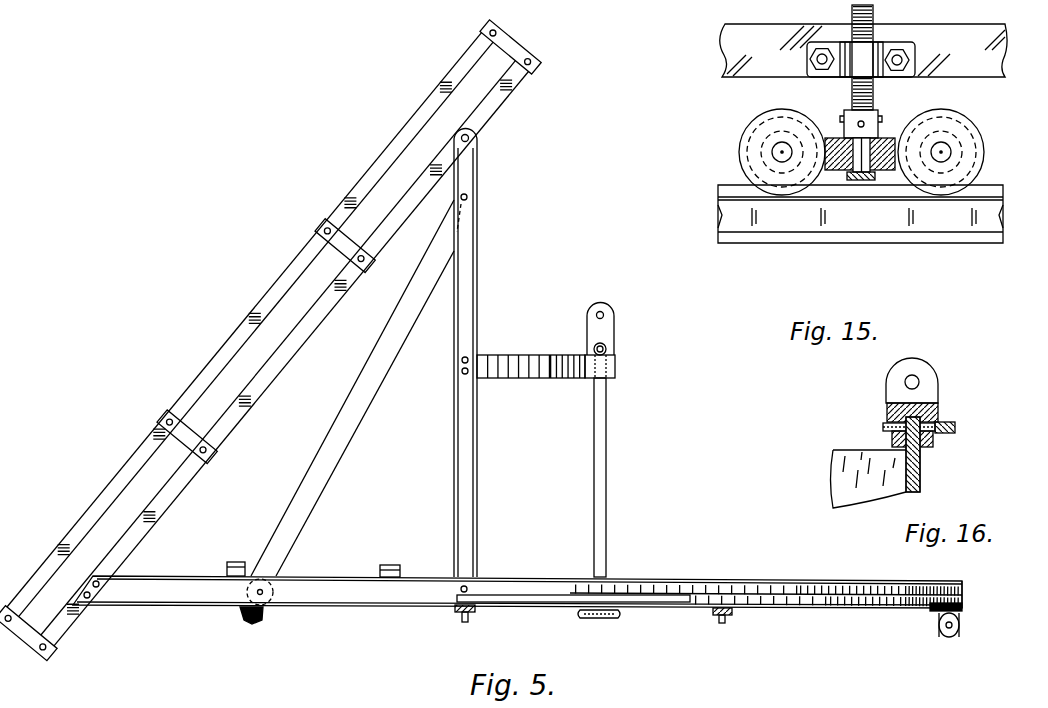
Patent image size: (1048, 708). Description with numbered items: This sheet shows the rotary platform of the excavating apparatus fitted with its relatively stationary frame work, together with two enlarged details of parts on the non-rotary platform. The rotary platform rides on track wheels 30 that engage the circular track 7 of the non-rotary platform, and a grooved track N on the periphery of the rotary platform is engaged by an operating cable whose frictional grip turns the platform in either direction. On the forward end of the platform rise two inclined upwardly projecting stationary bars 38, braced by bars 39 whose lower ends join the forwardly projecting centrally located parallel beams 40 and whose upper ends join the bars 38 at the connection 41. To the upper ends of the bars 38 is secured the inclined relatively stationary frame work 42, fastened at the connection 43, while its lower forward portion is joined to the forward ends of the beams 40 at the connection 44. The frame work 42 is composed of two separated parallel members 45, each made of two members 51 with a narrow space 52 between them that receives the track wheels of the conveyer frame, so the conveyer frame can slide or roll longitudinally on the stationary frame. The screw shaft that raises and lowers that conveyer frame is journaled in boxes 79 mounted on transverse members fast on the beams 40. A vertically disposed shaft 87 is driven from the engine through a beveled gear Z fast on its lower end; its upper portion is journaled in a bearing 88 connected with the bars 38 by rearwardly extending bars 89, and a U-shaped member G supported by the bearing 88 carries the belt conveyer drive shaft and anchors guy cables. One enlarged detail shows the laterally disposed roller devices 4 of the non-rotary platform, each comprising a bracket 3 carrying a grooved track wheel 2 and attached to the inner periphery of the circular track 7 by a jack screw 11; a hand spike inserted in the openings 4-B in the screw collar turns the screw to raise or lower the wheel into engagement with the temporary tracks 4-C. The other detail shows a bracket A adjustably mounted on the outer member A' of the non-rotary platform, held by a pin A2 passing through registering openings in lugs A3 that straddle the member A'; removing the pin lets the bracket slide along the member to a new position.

In FIG. 15, the grooved rollers or track wheels 2 is at (738, 148).
In FIG. 15, the brackets 3 is at (833, 72).
In FIG. 15, the roller devices 4 is at (916, 135).
In FIG. 15, the openings 4-B is at (846, 176).
In FIG. 15, the temporary tracks 4-C is at (892, 200).
In FIG. 15, the circular track 7 is at (1002, 63).
In FIG. 15, the jack screw 11 is at (873, 90).
In FIG. 16, the brackets A is at (926, 390).
In FIG. 16, the outer member of the non-rotary platform A' is at (893, 462).
In FIG. 16, the pin A2 is at (955, 422).
In FIG. 16, the lugs A3 is at (893, 437).
In FIG. 5, the track wheels 30 is at (258, 619).
In FIG. 5, the inclined upwardly projecting stationary bars 38 is at (461, 428).
In FIG. 5, the bars 39 is at (378, 390).
In FIG. 5, the parallel beams 40 is at (337, 600).
In FIG. 5, the connection of brace bars to upright bars 41 is at (471, 197).
In FIG. 5, the inclined relatively stationary frame work 42 is at (439, 93).
In FIG. 5, the connection of frame work to upright bars 43 is at (478, 137).
In FIG. 5, the connection of frame work to platform beams 44 is at (98, 588).
In FIG. 5, the parallel members 45 is at (285, 347).
In FIG. 5, the members 51 is at (112, 481).
In FIG. 5, the narrow space 52 is at (247, 364).
In FIG. 5, the boxes 79 is at (236, 562).
In FIG. 5, the vertically disposed shaft 87 is at (604, 493).
In FIG. 5, the bearing 88 is at (616, 371).
In FIG. 5, the rearwardly extending bars 89 is at (532, 372).
In FIG. 5, the U-shaped member G is at (609, 334).
In FIG. 5, the grooved track N is at (962, 601).
In FIG. 5, the beveled gear Z is at (580, 618).